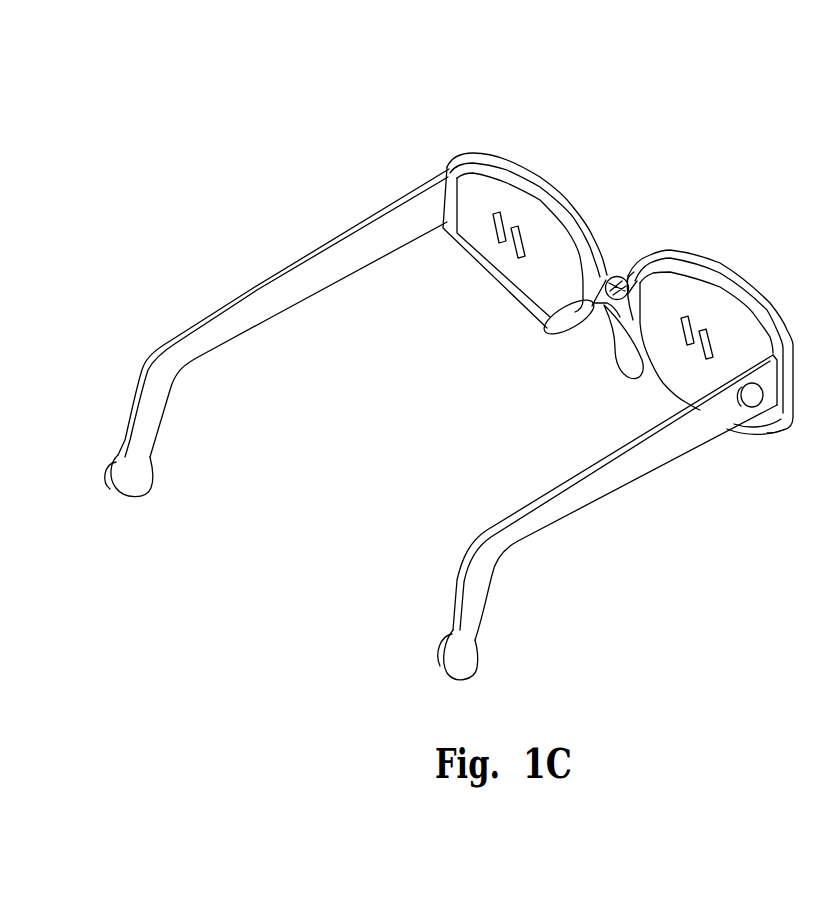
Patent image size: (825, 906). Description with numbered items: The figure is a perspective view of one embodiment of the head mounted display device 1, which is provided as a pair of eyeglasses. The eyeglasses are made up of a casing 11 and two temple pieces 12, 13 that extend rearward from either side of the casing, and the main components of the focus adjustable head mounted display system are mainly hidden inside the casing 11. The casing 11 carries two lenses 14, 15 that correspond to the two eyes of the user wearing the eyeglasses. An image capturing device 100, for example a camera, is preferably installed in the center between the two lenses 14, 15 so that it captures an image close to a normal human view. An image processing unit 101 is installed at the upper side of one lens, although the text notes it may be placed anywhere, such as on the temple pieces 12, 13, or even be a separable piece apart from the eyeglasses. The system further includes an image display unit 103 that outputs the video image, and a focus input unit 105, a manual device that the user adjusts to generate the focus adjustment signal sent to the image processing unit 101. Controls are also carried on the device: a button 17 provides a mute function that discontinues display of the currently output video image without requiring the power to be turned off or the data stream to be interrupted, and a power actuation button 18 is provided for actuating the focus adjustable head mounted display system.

The head mounted display device 1 is at (675, 119).
The casing 11 is at (708, 273).
The temple piece 12 is at (323, 270).
The temple piece 13 is at (622, 472).
The lens 14 is at (720, 327).
The lens 15 is at (530, 218).
The button 17 is at (105, 469).
The power actuation button 18 is at (755, 399).
The image capturing device 100 is at (615, 277).
The image processing unit 101 is at (627, 363).
The image display unit 103 is at (660, 225).
The focus input unit 105 is at (560, 327).